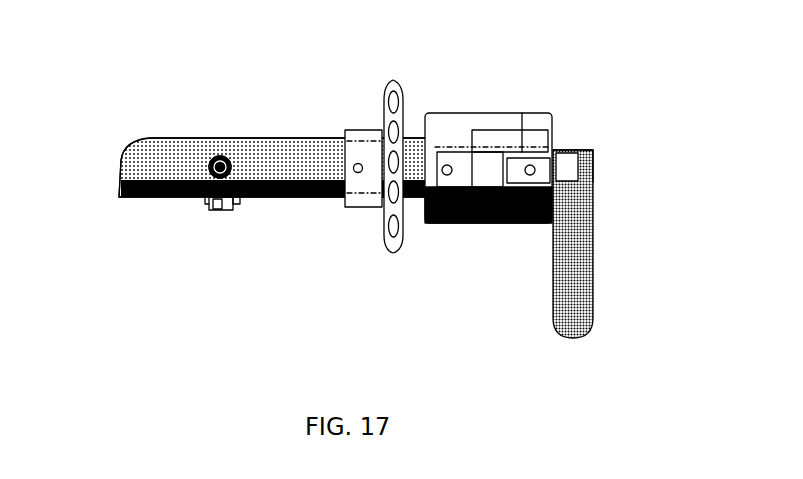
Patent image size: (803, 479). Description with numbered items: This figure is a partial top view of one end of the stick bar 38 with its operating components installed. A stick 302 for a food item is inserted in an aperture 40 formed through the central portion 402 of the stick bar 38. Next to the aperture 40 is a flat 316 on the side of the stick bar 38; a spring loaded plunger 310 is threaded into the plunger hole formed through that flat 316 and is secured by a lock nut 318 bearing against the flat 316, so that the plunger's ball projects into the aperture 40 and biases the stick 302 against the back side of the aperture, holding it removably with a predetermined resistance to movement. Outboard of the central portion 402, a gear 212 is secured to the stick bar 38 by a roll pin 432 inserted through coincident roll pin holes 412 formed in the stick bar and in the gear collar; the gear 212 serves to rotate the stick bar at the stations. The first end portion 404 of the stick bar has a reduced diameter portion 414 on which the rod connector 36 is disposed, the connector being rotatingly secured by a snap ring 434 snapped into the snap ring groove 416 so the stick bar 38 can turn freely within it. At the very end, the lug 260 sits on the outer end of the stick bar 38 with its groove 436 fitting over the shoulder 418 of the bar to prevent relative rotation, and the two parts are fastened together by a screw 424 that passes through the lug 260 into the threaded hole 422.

The stick bar 38 is at (147, 130).
The stick 302 is at (218, 157).
The aperture 40 is at (228, 158).
The central portion 402 is at (484, 178).
The spring loaded plunger 310 is at (217, 211).
The lock nut 318 is at (208, 197).
The flat 316 is at (240, 198).
The roll pin hole 412 is at (357, 213).
The roll pin 432 is at (358, 174).
The gear 212 is at (393, 79).
The first end portion 404 is at (500, 158).
The reduced diameter portion 414 is at (486, 150).
The threaded hole 422 is at (540, 113).
The rod connector 36 is at (522, 112).
The snap ring groove 416 is at (488, 241).
The snap ring 434 is at (492, 224).
The lug 260 is at (629, 216).
The screw 424 is at (590, 168).
The shoulder 418 is at (629, 138).
The groove 436 is at (575, 150).